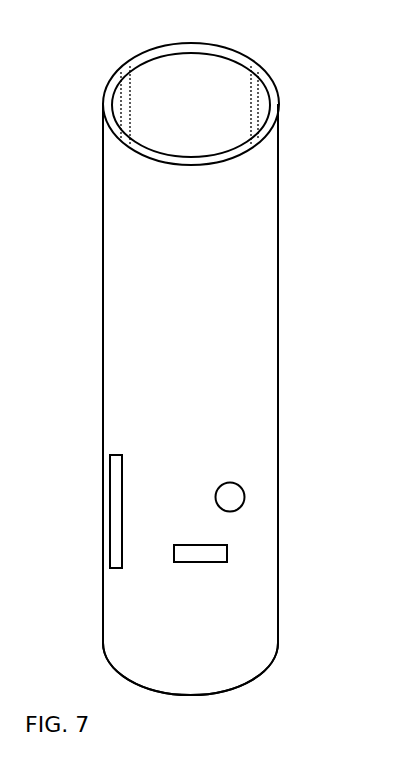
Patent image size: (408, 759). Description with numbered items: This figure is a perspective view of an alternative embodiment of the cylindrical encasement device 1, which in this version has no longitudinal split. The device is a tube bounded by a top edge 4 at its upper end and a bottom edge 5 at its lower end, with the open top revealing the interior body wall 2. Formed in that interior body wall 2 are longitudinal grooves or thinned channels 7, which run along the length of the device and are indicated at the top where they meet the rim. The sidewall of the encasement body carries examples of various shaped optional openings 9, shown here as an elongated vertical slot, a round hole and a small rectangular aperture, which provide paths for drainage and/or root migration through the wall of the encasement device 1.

The cylindrical encasement device 1 is at (210, 358).
The interior body wall 2 is at (180, 106).
The top edge 4 is at (273, 92).
The bottom edge 5 is at (268, 668).
The longitudinal grooves or thinned channels 7 is at (127, 72).
The shaped optional openings 9 is at (122, 513).